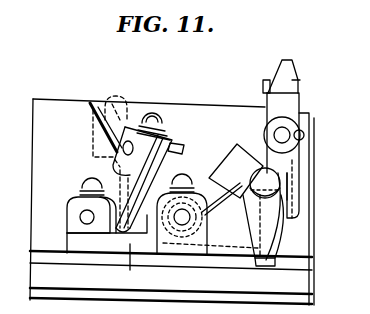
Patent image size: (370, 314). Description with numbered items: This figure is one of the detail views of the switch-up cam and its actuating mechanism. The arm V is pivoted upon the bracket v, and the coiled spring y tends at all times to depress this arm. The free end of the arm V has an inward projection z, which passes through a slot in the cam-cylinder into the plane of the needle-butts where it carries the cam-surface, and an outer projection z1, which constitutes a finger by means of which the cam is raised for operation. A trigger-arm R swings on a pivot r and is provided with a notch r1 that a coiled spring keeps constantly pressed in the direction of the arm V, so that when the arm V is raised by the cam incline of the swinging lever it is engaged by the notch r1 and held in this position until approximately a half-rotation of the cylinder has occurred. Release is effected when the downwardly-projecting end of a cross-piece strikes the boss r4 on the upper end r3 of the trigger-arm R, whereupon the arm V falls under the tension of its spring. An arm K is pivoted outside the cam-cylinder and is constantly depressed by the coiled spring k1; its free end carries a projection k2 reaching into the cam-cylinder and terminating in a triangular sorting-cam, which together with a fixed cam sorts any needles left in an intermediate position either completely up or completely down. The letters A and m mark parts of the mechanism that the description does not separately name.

The frame A is at (311, 224).
The trigger-arm R is at (290, 104).
The pivot r is at (291, 135).
The notch r1 is at (287, 182).
The upper end of trigger-arm r3 is at (264, 84).
The boss r4 is at (292, 65).
The arm K is at (113, 176).
The coiled spring k1 is at (70, 210).
The projection k2 is at (170, 135).
The stop m is at (170, 147).
The coiled spring y is at (207, 214).
The inward projection z is at (270, 246).
The outer projection z1 is at (260, 170).
The arm V is at (266, 276).
The bracket v is at (124, 267).